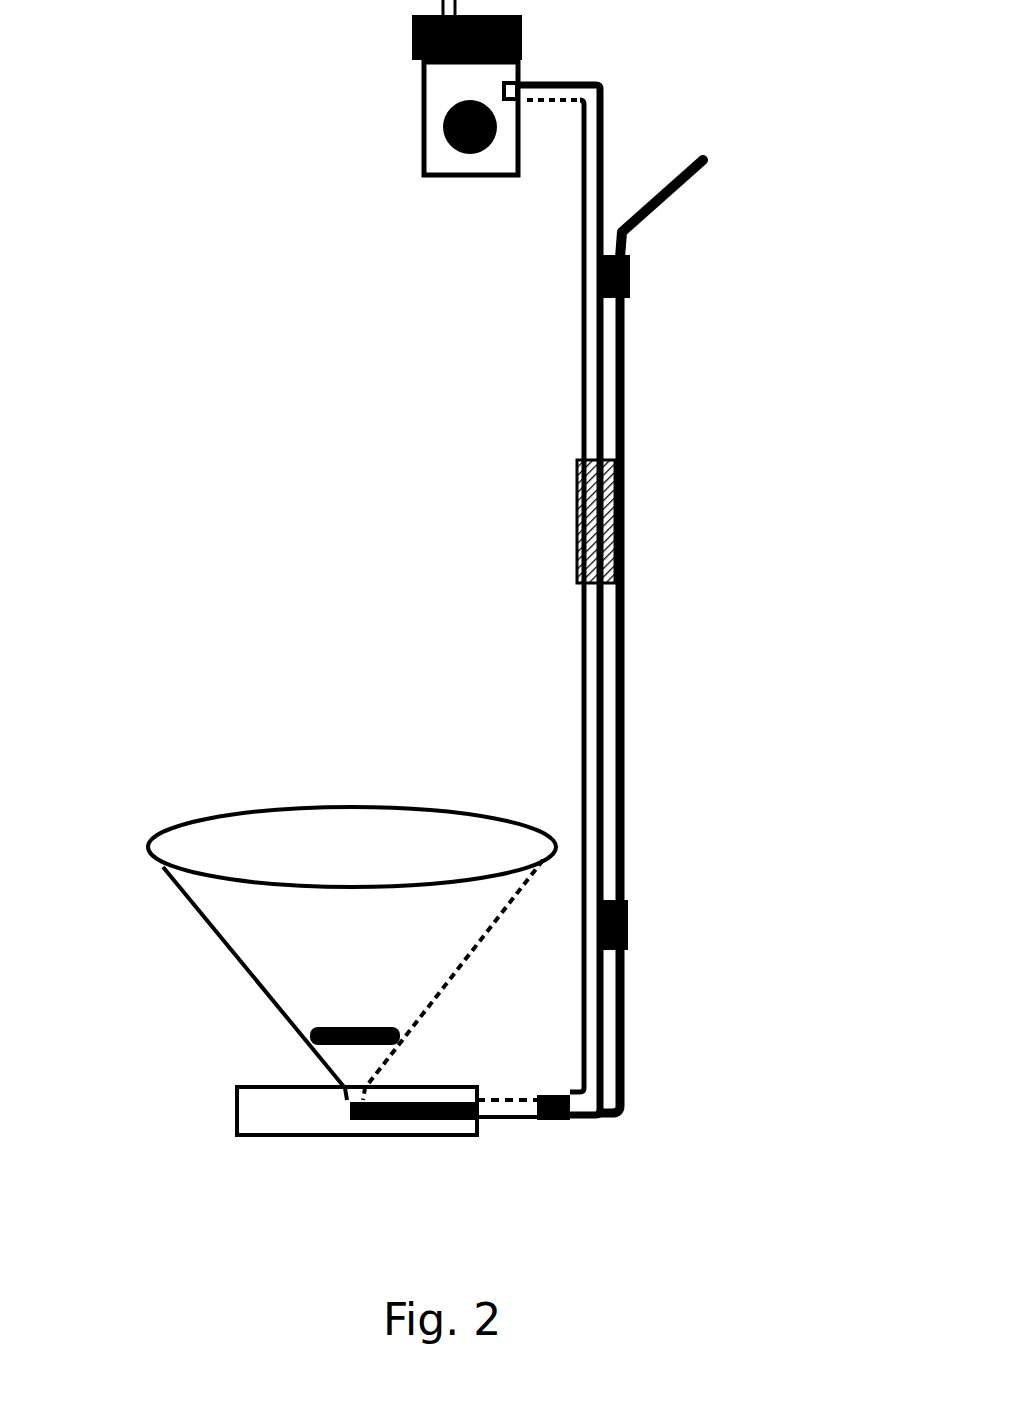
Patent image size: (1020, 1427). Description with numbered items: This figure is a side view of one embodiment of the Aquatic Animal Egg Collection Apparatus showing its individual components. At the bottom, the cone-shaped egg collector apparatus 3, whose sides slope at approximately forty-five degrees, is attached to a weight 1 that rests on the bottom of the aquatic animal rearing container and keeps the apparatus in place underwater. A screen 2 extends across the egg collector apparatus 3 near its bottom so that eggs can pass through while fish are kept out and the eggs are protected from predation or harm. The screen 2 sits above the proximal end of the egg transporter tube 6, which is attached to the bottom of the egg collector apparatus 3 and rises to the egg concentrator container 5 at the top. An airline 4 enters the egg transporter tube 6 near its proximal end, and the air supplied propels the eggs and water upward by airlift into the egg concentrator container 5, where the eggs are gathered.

The weight 1 is at (191, 1108).
The screen disc 2 is at (250, 1033).
The egg collector apparatus 3 is at (183, 800).
The airline 4 is at (664, 380).
The egg concentrator container 5 is at (385, 98).
The egg transporter tube 6 is at (533, 642).